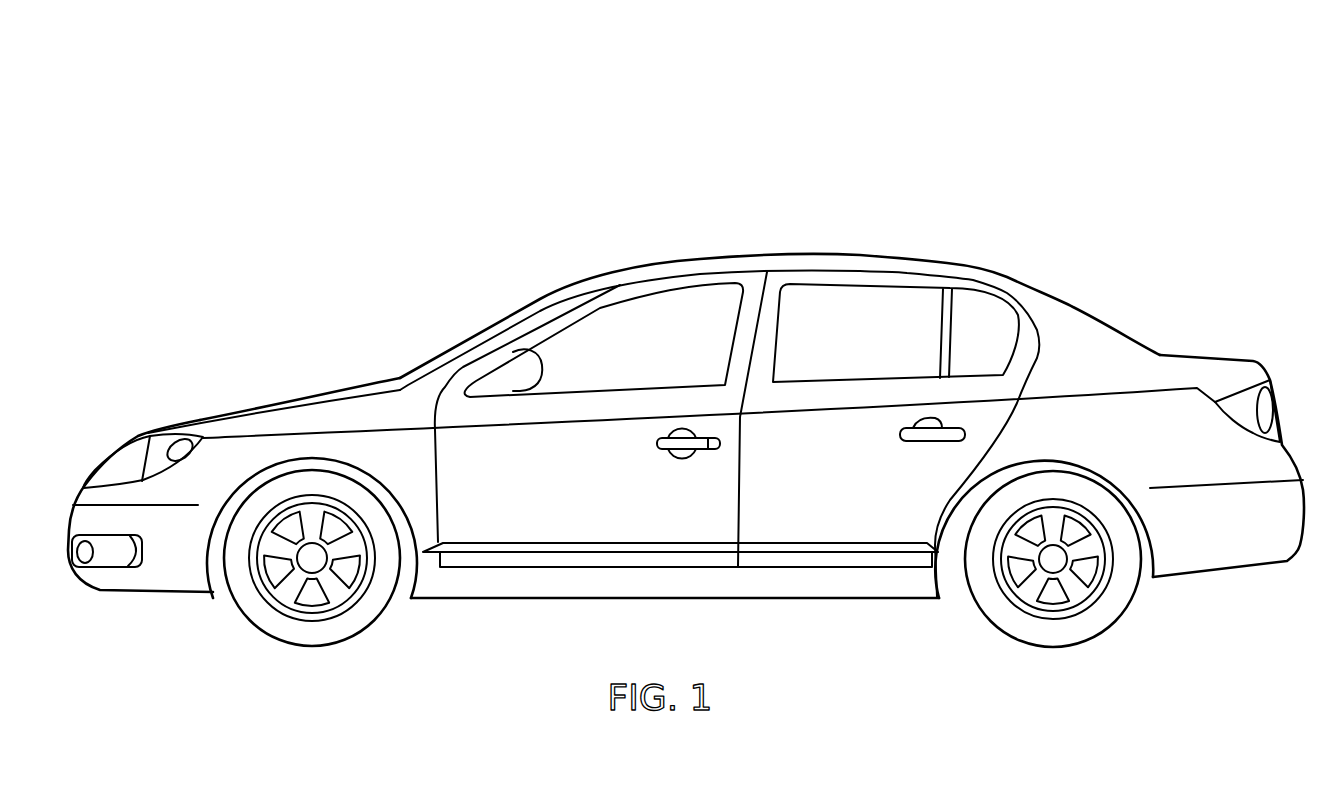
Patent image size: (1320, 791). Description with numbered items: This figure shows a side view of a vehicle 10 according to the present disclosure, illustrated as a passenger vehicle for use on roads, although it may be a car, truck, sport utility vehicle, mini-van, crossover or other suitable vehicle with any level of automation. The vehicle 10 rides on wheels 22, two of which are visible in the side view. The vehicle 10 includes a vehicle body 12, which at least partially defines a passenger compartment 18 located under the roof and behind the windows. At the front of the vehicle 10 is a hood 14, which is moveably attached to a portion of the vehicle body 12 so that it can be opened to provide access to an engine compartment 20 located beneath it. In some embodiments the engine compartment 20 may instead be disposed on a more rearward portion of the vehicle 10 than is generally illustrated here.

The vehicle 10 is at (160, 158).
The vehicle body 12 is at (407, 473).
The hood 14 is at (223, 393).
The passenger compartment 18 is at (630, 353).
The engine compartment 20 is at (315, 413).
The wheels 22 is at (1008, 583).